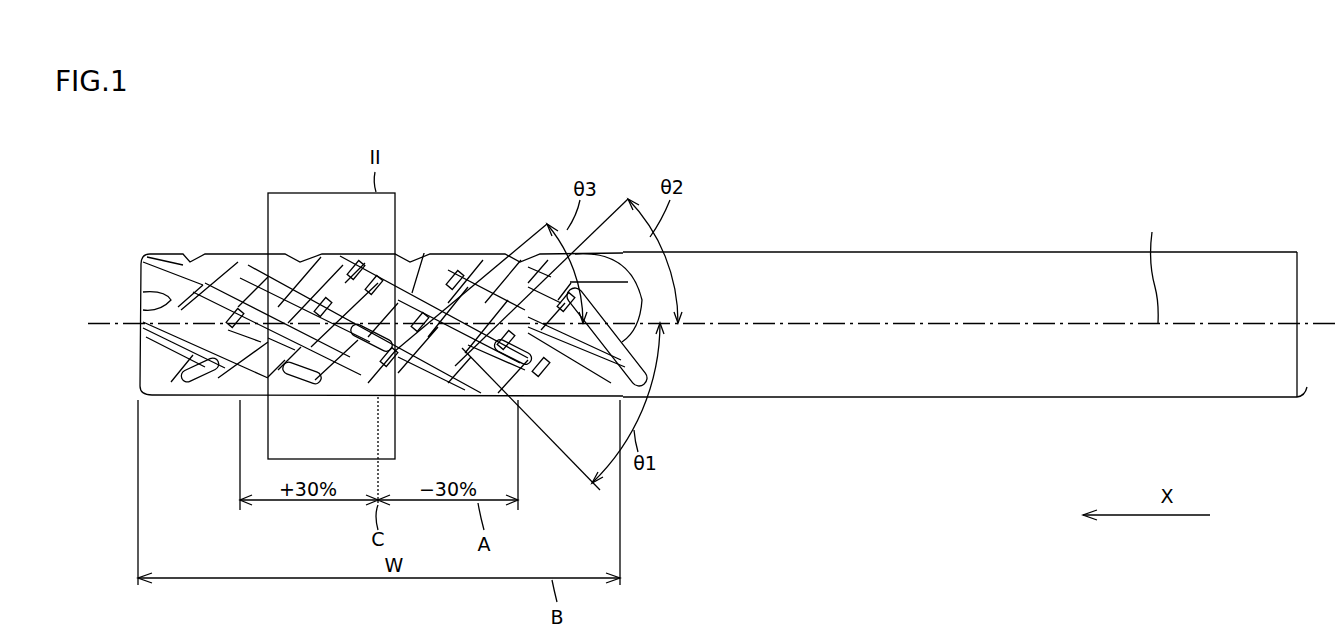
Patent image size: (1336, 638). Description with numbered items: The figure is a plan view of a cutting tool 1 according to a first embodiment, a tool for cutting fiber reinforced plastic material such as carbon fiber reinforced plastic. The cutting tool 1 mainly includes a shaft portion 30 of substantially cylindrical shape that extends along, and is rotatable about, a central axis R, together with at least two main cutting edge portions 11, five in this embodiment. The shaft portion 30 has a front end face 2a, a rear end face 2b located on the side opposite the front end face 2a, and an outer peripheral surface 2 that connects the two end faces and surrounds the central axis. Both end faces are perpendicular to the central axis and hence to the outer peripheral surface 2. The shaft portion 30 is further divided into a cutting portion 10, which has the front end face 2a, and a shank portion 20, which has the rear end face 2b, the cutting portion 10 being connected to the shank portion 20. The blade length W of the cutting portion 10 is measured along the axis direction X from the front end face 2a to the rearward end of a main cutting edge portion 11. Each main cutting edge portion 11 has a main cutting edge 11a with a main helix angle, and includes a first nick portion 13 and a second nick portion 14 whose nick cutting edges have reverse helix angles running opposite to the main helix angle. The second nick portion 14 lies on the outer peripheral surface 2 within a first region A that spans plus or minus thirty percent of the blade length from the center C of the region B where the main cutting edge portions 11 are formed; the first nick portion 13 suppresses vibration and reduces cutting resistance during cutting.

The cutting tool 1 is at (1088, 159).
The outer peripheral surface 2 is at (960, 398).
The front end face 2a is at (137, 283).
The rear end face 2b is at (1306, 382).
The cutting portion 10 is at (363, 347).
The main cutting edge portion 11 is at (163, 270).
The main cutting edge 11a is at (440, 270).
The first nick portion 13 is at (556, 396).
The second nick portion 14 is at (413, 400).
The shank portion 20 is at (848, 375).
The shaft portion 30 is at (1065, 377).